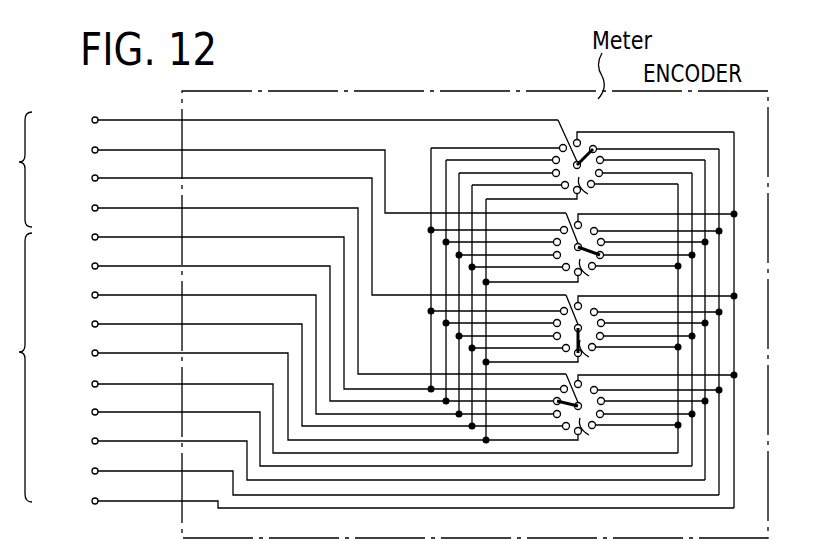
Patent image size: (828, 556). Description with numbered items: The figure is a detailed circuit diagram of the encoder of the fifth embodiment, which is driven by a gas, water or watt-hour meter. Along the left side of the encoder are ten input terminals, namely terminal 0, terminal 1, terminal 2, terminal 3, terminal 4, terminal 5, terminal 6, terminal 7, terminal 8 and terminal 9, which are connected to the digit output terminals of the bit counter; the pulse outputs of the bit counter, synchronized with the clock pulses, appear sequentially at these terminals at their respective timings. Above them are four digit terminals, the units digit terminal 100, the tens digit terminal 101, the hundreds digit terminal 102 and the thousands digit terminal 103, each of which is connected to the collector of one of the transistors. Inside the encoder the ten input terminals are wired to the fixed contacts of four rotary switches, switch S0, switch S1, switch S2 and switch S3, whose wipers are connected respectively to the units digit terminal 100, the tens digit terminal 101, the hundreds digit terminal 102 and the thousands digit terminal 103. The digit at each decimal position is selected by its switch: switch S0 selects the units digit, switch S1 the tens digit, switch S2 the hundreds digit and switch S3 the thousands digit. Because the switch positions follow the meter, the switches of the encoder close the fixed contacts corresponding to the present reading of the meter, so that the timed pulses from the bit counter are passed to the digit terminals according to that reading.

The 10^3 digit terminal 103 is at (298, 120).
The 10^2 digit terminal 102 is at (302, 174).
The 10^1 digit terminal 101 is at (302, 229).
The 10^0 digit terminal 100 is at (302, 284).
The terminal 9 is at (240, 305).
The terminal 8 is at (248, 326).
The terminal 7 is at (254, 347).
The terminal 6 is at (261, 367).
The terminal 5 is at (268, 389).
The terminal 4 is at (364, 411).
The terminal 3 is at (371, 431).
The terminal 2 is at (377, 453).
The terminal 1 is at (384, 475).
The terminal 0 is at (392, 501).
The switch S3 is at (582, 166).
The switch S2 is at (582, 254).
The switch S1 is at (582, 335).
The switch S0 is at (582, 414).